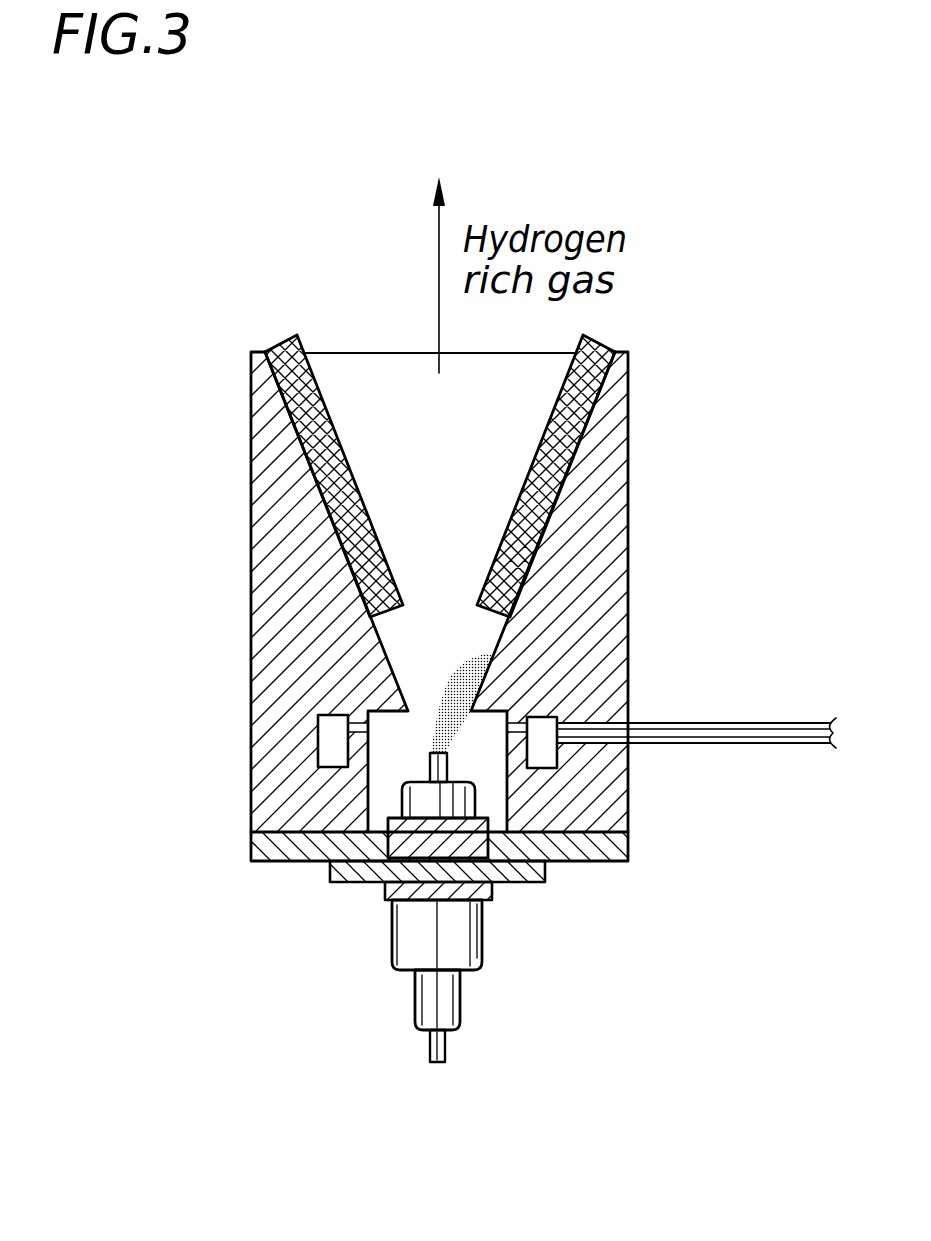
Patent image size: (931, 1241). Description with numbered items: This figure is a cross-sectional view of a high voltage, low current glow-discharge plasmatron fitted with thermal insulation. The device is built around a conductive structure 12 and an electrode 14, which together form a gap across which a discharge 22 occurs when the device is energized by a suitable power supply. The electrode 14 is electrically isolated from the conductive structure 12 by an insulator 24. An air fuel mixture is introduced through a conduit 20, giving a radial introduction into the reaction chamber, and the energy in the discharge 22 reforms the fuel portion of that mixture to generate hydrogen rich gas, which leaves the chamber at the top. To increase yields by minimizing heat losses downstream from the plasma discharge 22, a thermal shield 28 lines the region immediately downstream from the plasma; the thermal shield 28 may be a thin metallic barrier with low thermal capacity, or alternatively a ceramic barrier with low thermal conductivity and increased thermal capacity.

The conductive structure 12 is at (253, 602).
The thermal shield 28 is at (342, 446).
The discharge 22 is at (483, 657).
The conduit 20 is at (765, 723).
The insulator 24 is at (473, 918).
The electrode 14 is at (428, 1047).